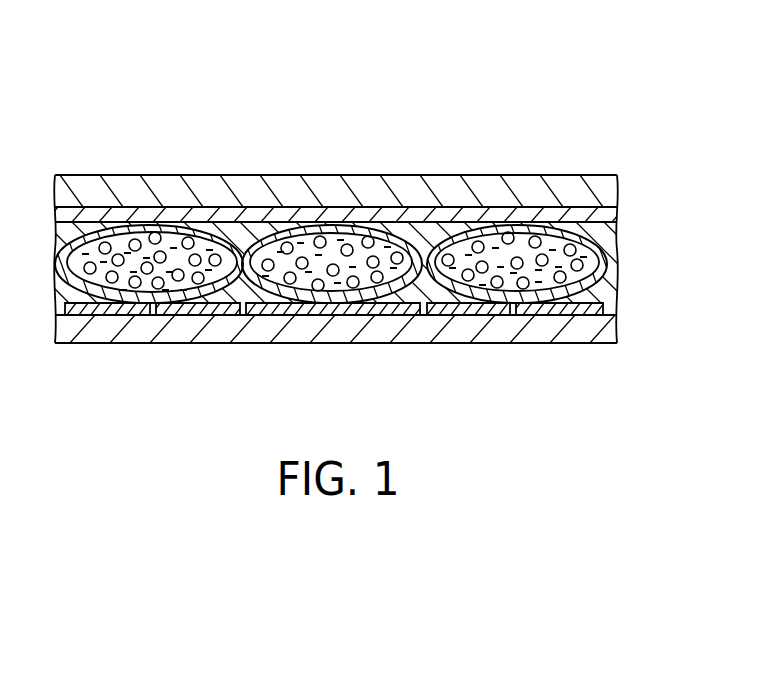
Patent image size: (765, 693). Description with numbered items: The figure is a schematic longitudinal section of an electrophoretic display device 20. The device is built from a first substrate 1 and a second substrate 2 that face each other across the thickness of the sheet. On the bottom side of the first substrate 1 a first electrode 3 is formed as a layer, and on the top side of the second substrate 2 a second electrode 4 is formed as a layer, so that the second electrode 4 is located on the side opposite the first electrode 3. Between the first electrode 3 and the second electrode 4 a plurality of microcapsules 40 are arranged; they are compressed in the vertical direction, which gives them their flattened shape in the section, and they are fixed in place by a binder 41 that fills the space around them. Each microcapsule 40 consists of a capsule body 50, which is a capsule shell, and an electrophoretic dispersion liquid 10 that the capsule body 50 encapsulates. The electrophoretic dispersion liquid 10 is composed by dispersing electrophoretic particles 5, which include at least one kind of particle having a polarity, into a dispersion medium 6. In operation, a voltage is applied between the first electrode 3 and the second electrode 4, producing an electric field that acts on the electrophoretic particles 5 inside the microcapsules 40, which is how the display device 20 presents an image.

The first substrate 1 is at (440, 200).
The second substrate 2 is at (403, 333).
The first electrode 3 is at (380, 216).
The second electrode 4 is at (344, 308).
The electrophoretic particles 5 is at (134, 287).
The dispersion medium 6 is at (162, 293).
The electrophoretic dispersion liquid 10 is at (349, 330).
The electrophoretic display device 20 is at (597, 147).
The microcapsule 40 is at (243, 235).
The binder 41 is at (72, 243).
The capsule body 50 is at (167, 288).